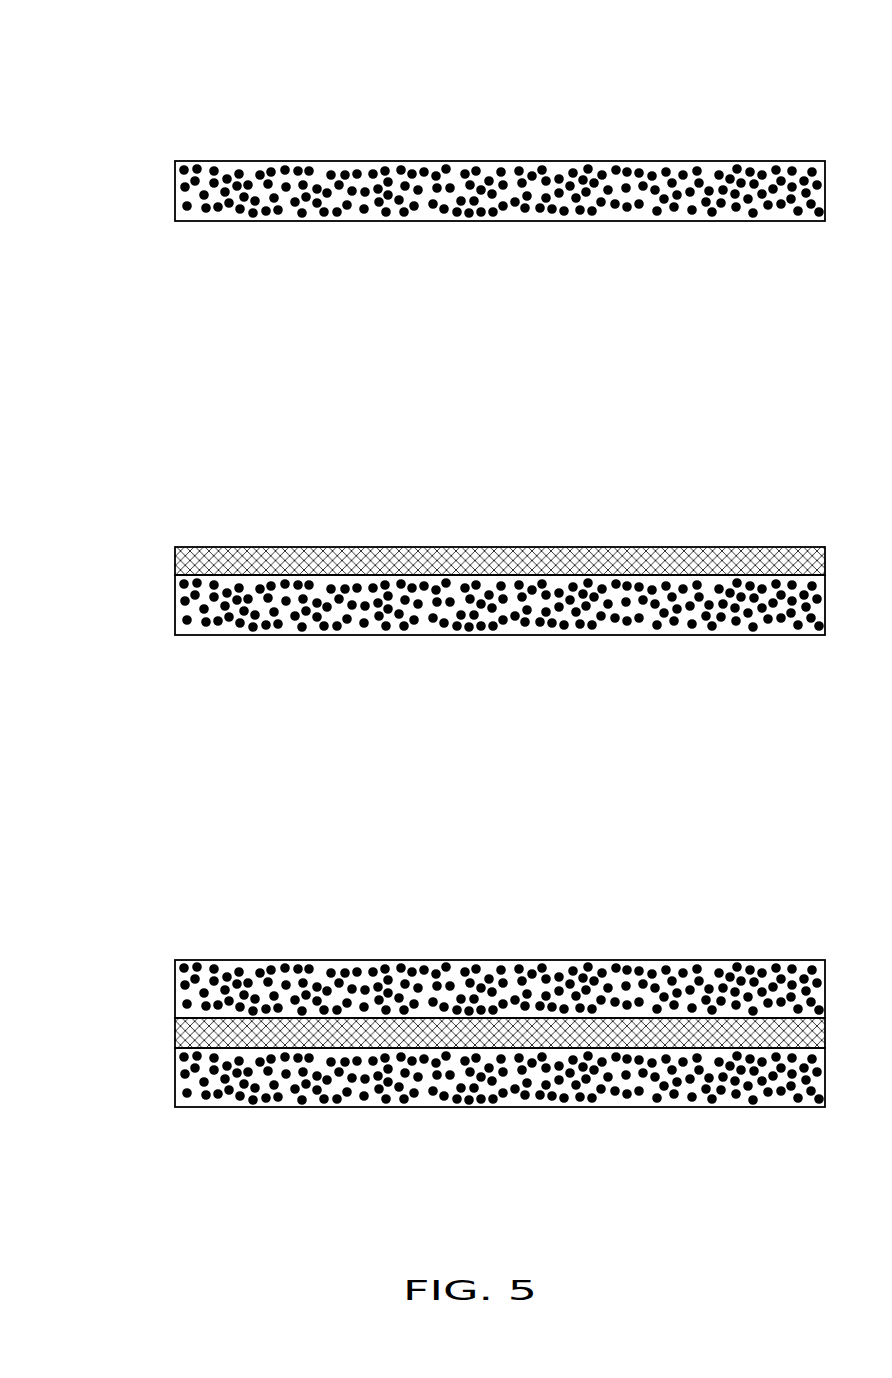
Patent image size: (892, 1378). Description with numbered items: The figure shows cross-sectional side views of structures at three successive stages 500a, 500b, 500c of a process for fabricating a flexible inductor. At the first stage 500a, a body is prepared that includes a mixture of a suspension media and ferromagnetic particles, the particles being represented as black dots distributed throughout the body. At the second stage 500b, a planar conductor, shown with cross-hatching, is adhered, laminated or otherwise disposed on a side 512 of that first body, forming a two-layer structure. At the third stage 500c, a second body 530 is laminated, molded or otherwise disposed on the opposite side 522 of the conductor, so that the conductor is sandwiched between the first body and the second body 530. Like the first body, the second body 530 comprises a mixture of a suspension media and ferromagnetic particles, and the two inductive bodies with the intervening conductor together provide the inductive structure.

The first stage 500a is at (86, 84).
The second stage 500b is at (86, 440).
The third stage 500c is at (86, 852).
The side of body 512 is at (524, 147).
The side of conductor 522 is at (524, 532).
The body 530 is at (165, 990).